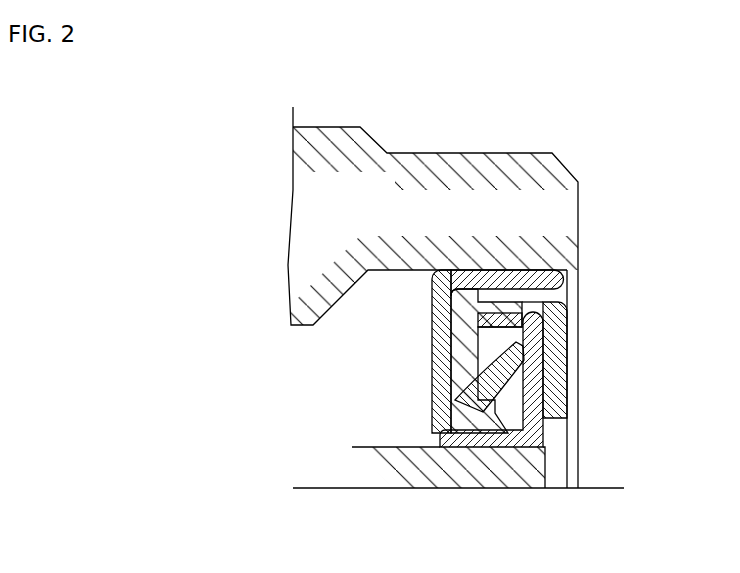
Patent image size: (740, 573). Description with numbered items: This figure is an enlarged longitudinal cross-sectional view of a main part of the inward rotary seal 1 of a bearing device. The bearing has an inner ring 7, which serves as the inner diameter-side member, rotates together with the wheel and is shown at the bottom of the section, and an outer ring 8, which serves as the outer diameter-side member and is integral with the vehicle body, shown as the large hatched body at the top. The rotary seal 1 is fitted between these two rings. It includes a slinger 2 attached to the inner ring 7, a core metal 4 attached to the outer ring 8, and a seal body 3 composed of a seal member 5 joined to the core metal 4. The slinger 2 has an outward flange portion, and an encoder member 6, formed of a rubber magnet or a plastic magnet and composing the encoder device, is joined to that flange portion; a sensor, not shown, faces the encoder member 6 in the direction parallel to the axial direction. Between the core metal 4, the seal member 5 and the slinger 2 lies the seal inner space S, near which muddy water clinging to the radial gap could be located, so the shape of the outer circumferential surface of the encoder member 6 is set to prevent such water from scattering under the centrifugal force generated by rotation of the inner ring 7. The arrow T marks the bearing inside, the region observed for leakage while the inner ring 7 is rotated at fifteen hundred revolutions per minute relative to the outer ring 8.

The inward rotary seal 1 is at (581, 326).
The slinger 2 is at (496, 445).
The seal body 3 is at (451, 351).
The core metal 4 is at (422, 305).
The seal member 5 is at (451, 359).
The encoder member 6 is at (568, 371).
The inner ring 7 is at (447, 490).
The outer ring 8 is at (441, 170).
The seal inner space S is at (500, 335).
The bearing inside T is at (383, 421).